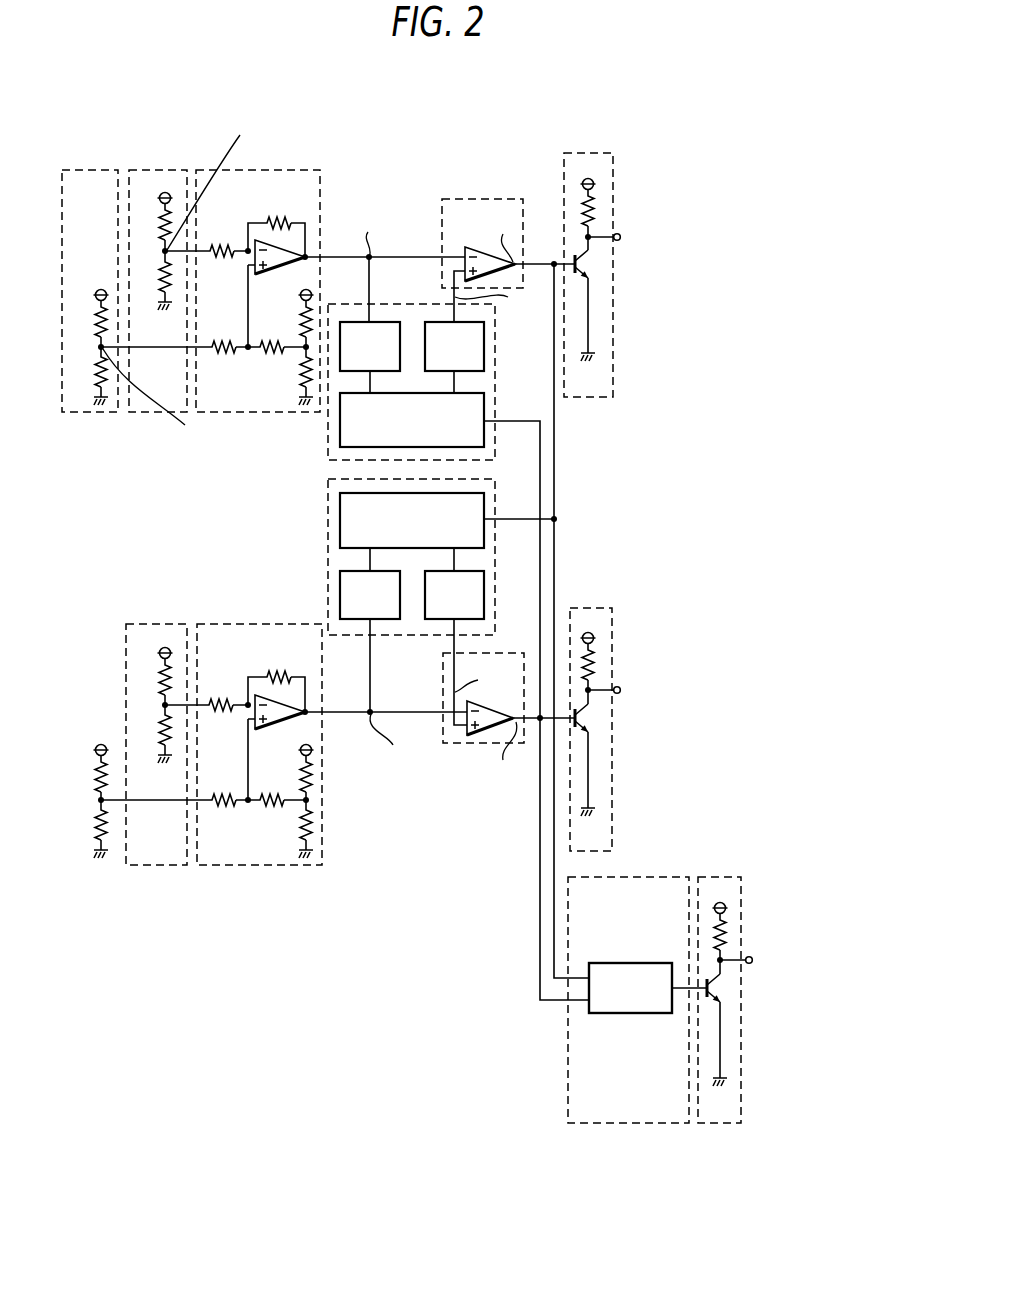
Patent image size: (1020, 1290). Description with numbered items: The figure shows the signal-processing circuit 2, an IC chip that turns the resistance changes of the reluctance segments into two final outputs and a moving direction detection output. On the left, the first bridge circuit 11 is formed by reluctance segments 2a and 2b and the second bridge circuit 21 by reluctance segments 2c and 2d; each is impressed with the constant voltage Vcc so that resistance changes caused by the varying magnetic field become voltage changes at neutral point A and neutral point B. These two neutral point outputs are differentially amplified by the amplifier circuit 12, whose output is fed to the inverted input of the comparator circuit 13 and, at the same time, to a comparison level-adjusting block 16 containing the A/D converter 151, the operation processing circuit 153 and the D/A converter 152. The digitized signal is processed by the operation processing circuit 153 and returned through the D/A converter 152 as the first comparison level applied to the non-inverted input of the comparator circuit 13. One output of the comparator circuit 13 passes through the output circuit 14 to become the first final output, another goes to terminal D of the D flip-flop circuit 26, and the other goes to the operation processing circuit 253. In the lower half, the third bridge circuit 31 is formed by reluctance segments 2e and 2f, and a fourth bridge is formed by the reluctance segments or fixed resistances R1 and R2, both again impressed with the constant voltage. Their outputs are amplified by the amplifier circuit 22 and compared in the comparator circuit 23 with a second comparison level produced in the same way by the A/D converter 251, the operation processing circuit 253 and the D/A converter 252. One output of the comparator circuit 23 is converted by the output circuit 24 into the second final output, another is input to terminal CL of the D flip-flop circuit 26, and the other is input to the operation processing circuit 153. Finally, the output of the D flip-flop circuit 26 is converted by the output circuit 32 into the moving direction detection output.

The signal-processing circuit 2 is at (388, 940).
The reluctance segment 2a is at (152, 224).
The reluctance segment 2b is at (152, 276).
The reluctance segment 2c is at (88, 321).
The reluctance segment 2d is at (88, 371).
The reluctance segment 2e is at (151, 679).
The reluctance segment 2f is at (152, 729).
The first bridge circuit 11 is at (163, 269).
The amplifier circuit 12 is at (290, 170).
The comparator circuit 13 is at (483, 199).
The output circuit 14 is at (590, 153).
The first offset correction circuit 16 is at (407, 368).
The second bridge circuit 21 is at (97, 269).
The amplifier circuit 22 is at (240, 624).
The comparator circuit 23 is at (505, 653).
The output circuit 24 is at (590, 608).
The D flip-flop circuit 26 is at (475, 801).
The third bridge circuit 31 is at (166, 723).
The output circuit 32 is at (722, 877).
The A/D converter 151 is at (378, 322).
The D/A converter 152 is at (487, 349).
The operation processing circuit 153 is at (340, 421).
The A/D converter 251 is at (340, 593).
The D/A converter 252 is at (487, 590).
The operation processing circuit 253 is at (340, 519).
The fixed resistance R1 is at (87, 776).
The fixed resistance R2 is at (87, 824).